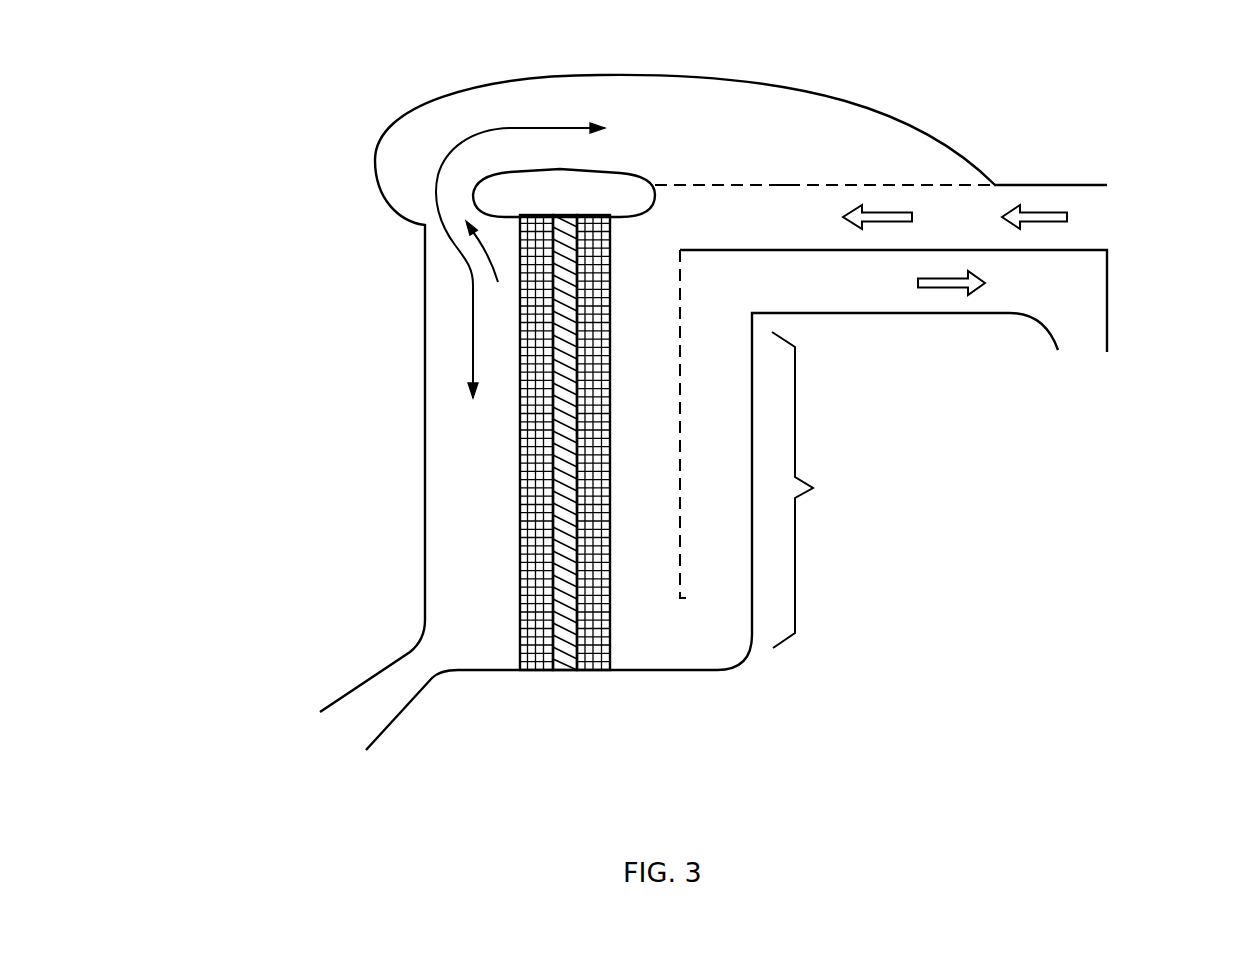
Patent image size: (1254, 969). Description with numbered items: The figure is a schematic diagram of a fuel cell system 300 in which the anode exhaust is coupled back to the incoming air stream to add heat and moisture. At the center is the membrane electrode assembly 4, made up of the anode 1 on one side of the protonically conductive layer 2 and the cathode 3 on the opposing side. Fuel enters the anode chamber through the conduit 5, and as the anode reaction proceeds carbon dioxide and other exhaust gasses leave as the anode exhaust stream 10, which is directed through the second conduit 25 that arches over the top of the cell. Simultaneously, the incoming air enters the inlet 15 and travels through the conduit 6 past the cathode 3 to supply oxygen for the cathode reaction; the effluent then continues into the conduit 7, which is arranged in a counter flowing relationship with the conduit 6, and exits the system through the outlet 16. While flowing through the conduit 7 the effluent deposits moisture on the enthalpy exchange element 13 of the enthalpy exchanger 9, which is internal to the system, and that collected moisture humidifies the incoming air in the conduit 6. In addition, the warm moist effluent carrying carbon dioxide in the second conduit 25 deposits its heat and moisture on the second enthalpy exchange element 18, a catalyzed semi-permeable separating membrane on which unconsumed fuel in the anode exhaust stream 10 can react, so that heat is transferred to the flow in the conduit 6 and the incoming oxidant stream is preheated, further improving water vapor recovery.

The gas treatment apparatus 300 is at (333, 117).
The second conduit 25 is at (655, 80).
The second enthalpy exchange element 18 is at (777, 185).
The inlet 15 is at (1092, 213).
The outlet 16 is at (1078, 323).
The conduit 6 is at (652, 456).
The conduit 7 is at (883, 294).
The fuel inlet conduit 5 is at (484, 456).
The anode exhaust stream 10 is at (489, 265).
The enthalpy exchanger 9 is at (802, 490).
The enthalpy exchange element 13 is at (688, 598).
The anode 1 is at (538, 672).
The protonically conductive layer 2 is at (564, 672).
The cathode 3 is at (593, 672).
The membrane electrode assembly 4 is at (609, 770).